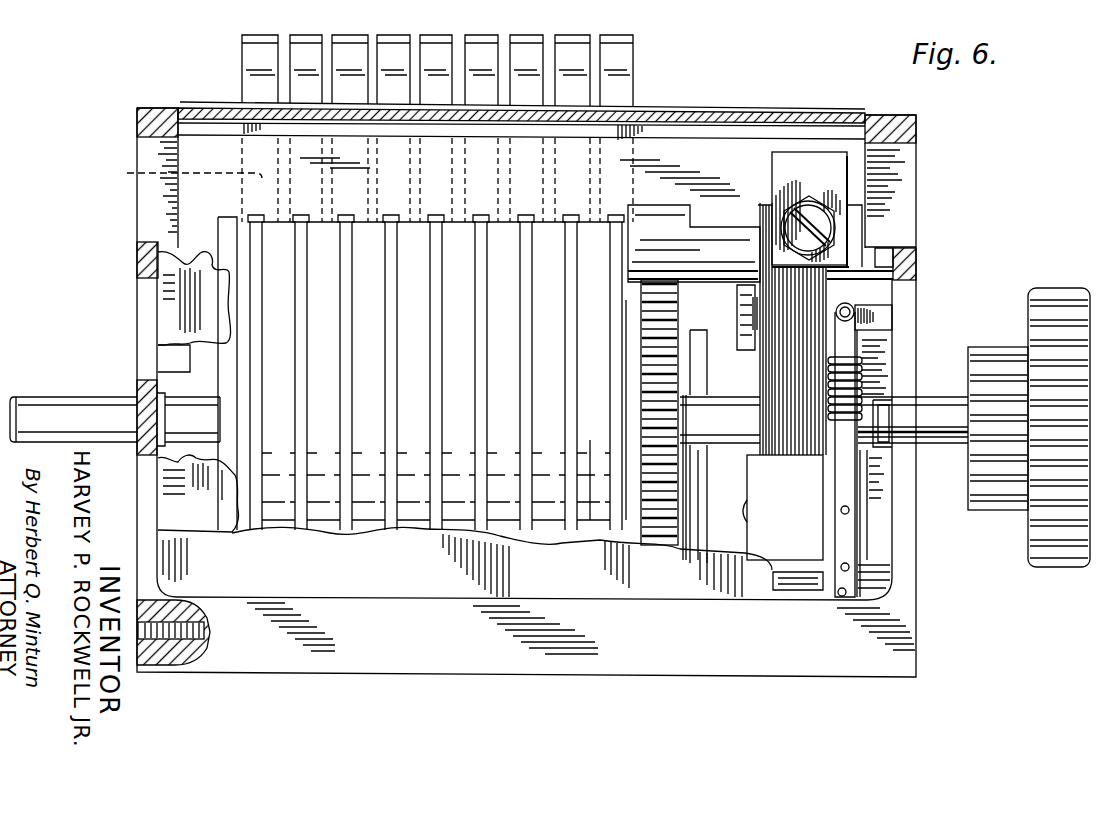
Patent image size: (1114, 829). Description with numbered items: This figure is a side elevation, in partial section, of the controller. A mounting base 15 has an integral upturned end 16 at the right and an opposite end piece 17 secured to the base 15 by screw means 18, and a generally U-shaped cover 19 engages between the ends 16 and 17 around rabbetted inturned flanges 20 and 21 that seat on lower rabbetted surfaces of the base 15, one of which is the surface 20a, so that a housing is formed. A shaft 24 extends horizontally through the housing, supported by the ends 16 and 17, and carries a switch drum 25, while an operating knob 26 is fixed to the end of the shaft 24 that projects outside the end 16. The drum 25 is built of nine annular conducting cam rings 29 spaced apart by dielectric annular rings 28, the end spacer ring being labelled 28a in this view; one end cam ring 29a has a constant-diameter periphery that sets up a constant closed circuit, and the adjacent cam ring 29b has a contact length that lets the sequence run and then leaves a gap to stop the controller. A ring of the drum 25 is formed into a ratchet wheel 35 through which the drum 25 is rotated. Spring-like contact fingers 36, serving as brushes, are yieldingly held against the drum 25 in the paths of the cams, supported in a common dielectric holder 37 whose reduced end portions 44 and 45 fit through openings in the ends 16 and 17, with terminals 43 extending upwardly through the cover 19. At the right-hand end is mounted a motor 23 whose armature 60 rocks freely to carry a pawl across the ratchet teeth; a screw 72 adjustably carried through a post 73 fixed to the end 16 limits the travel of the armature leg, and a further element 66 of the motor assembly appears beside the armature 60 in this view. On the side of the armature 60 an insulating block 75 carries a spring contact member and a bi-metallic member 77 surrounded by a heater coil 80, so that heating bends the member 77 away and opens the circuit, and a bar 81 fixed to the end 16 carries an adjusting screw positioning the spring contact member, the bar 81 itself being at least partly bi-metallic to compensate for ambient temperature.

The mounting base 15 is at (440, 665).
The upturned end 16 is at (910, 265).
The end piece 17 is at (135, 280).
The screw means 18 is at (175, 650).
The cover 19 is at (688, 116).
The rabbetted inturned flange 20 is at (905, 133).
The lower rabbetted surface 20a is at (797, 588).
The rabbetted inturned flange 21 is at (166, 353).
The motor 23 is at (725, 553).
The shaft 24 is at (42, 412).
The switch drum 25 is at (235, 243).
The operating knob 26 is at (1034, 566).
The dielectric annular ring 28 is at (262, 528).
The end key 28a is at (225, 500).
The cam ring 29 is at (303, 528).
The end cam ring 29a is at (622, 538).
The cam ring 29b is at (585, 538).
The ratchet wheel 35 is at (672, 316).
The contact finger 36 is at (177, 175).
The dielectric holder 37 is at (202, 147).
The terminals 43 is at (252, 55).
The reduced end portion 44 is at (912, 200).
The reduced end portion 45 is at (147, 155).
The armature 60 is at (772, 362).
The slide block 66 is at (768, 523).
The screw 72 is at (817, 225).
The post 73 is at (778, 172).
The insulating block 75 is at (862, 511).
The bi-metallic member 77 is at (843, 458).
The heater coil 80 is at (857, 380).
The bar 81 is at (880, 317).